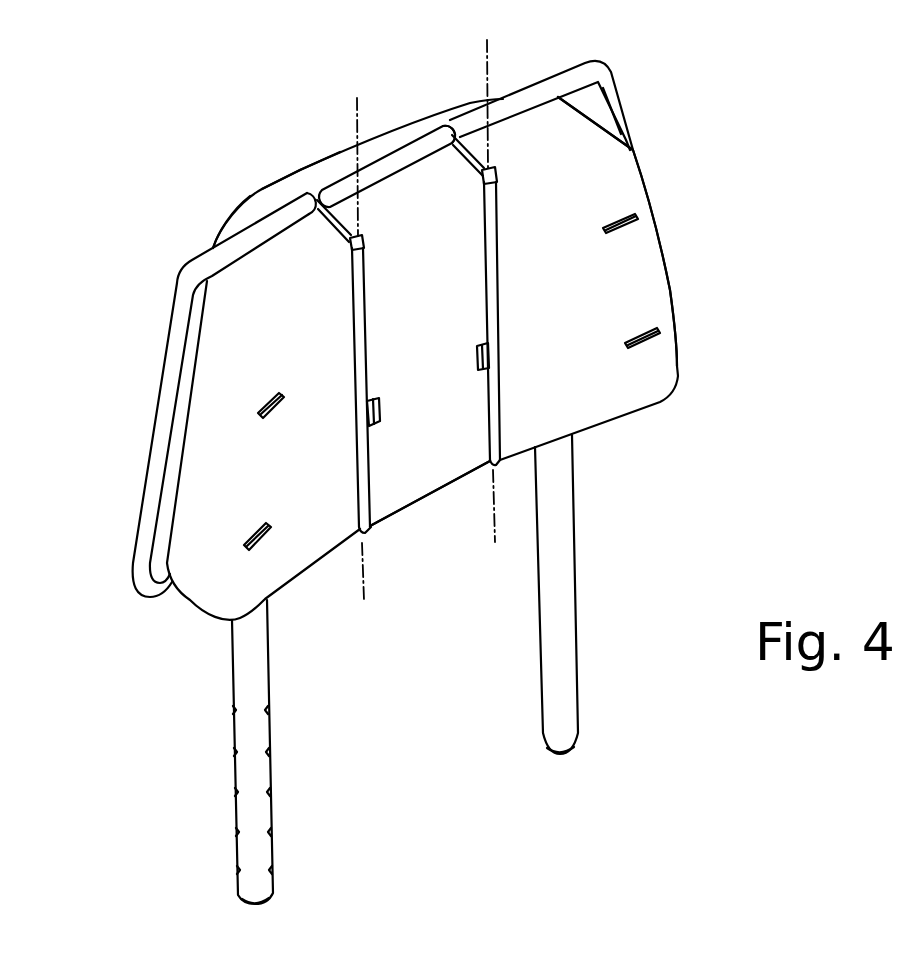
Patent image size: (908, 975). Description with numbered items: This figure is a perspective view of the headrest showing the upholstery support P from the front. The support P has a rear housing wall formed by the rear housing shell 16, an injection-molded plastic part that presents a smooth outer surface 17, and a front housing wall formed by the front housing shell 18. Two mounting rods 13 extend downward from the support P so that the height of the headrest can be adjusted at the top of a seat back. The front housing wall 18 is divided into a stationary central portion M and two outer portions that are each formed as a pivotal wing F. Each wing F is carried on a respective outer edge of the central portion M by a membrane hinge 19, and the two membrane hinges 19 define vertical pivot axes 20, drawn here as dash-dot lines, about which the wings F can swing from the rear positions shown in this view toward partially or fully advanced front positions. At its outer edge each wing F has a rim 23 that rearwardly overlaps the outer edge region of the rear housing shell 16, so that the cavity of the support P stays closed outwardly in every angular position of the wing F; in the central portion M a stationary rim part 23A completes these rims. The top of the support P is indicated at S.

The mounting rods 13 is at (233, 774).
The rear housing shell 16 is at (252, 193).
The smooth outer surface 17 is at (303, 168).
The front housing shell 18 is at (671, 220).
The membrane hinge 19 is at (350, 327).
The vertical pivot axes 20 is at (357, 107).
The rim 23 is at (631, 99).
The stationary rim part 23A is at (439, 119).
The top of the support S is at (333, 152).
The upholstery support P is at (708, 294).
The central portion M is at (444, 489).
The wing F is at (625, 418).